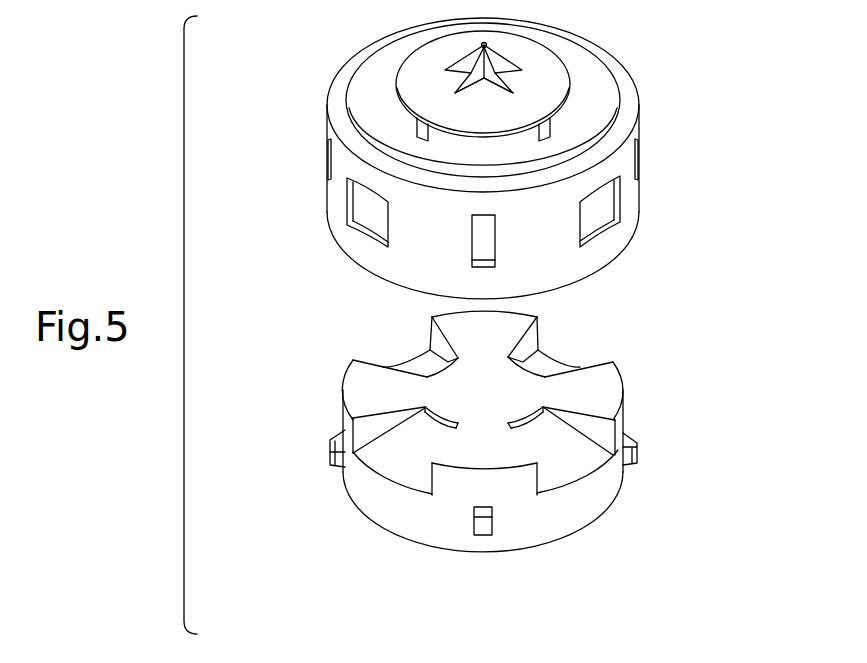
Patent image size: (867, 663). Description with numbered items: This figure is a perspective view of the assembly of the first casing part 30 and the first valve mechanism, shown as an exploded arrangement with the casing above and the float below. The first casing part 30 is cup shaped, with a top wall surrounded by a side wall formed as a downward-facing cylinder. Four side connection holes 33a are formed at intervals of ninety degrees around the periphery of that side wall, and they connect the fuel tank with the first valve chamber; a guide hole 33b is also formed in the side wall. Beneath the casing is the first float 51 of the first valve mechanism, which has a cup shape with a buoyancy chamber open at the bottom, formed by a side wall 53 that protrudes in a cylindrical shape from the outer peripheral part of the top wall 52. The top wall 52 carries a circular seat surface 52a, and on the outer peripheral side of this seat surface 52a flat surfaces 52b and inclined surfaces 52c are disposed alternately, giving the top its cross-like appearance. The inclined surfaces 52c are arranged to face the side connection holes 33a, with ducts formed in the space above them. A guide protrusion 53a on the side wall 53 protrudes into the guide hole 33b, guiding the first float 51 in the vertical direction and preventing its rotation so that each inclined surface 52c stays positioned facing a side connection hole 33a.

The first casing part 30 is at (631, 92).
The side connection hole 33a is at (378, 212).
The guide hole 33b is at (483, 240).
The first float 51 is at (588, 383).
The top wall 52 is at (581, 447).
The seat surface 52a is at (505, 395).
The flat surface 52b is at (503, 457).
The inclined surface 52c is at (562, 470).
The side wall 53 is at (544, 528).
The guide protrusion 53a is at (637, 445).